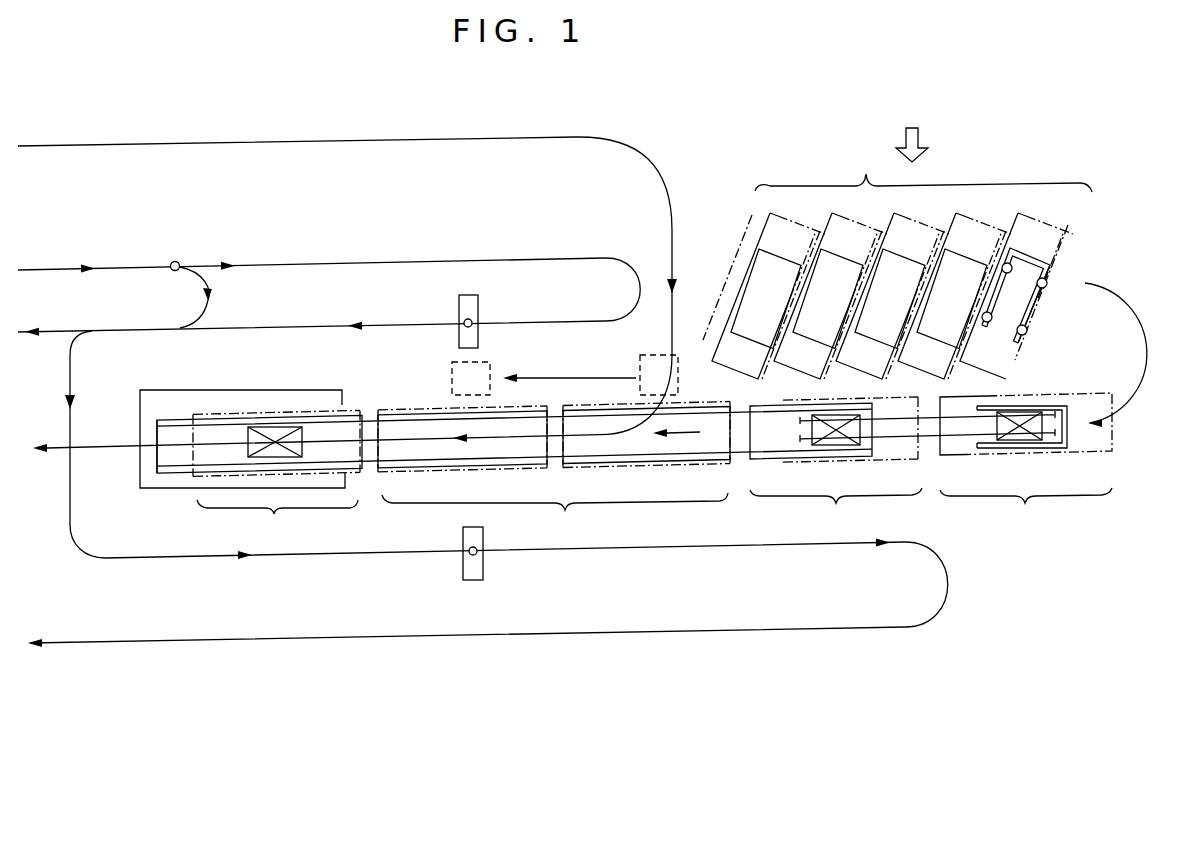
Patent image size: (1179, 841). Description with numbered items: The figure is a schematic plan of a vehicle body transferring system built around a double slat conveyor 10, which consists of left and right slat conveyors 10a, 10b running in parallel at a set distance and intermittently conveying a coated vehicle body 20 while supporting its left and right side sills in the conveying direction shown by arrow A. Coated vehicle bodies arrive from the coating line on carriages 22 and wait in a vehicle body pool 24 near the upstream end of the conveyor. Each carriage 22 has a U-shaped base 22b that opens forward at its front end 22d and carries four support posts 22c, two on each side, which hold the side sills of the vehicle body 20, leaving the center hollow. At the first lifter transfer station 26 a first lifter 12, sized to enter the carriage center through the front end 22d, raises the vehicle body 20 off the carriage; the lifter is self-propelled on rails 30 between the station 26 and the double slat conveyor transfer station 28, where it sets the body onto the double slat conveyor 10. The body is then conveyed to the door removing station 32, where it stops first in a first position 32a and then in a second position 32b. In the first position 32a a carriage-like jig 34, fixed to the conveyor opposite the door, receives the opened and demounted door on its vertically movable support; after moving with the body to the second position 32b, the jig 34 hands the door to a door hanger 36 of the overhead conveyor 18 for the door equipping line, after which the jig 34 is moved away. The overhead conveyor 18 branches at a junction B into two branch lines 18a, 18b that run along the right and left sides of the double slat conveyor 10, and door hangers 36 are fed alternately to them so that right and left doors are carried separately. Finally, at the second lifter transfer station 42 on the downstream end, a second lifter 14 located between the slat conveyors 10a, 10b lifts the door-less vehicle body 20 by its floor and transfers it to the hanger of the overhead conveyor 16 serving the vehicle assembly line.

The double slat conveyor 10 is at (735, 398).
The left slat conveyor 10a is at (150, 417).
The right slat conveyor 10b is at (155, 465).
The first lifter 12 is at (1045, 410).
The second lifter 14 is at (275, 427).
The overhead conveyor 16 is at (172, 146).
The overhead conveyor 18 is at (121, 262).
The branch line 18a is at (333, 258).
The branch line 18b is at (210, 305).
The vehicle body 20 is at (762, 228).
The carriage 22 is at (773, 266).
The U-shaped base 22b is at (1066, 272).
The support posts 22c is at (983, 315).
The front end 22d is at (970, 443).
The vehicle body pool 24 is at (923, 148).
The first lifter transfer station 26 is at (1026, 464).
The double slat conveyor transfer station 28 is at (836, 467).
The rails 30 is at (885, 448).
The door removing station 32 is at (555, 518).
The first position 32a is at (595, 470).
The second position 32b is at (468, 470).
The jig 34 is at (489, 367).
The door hanger 36 is at (480, 302).
The second lifter transfer station 42 is at (251, 470).
The conveying direction A is at (683, 440).
The junction B is at (180, 258).